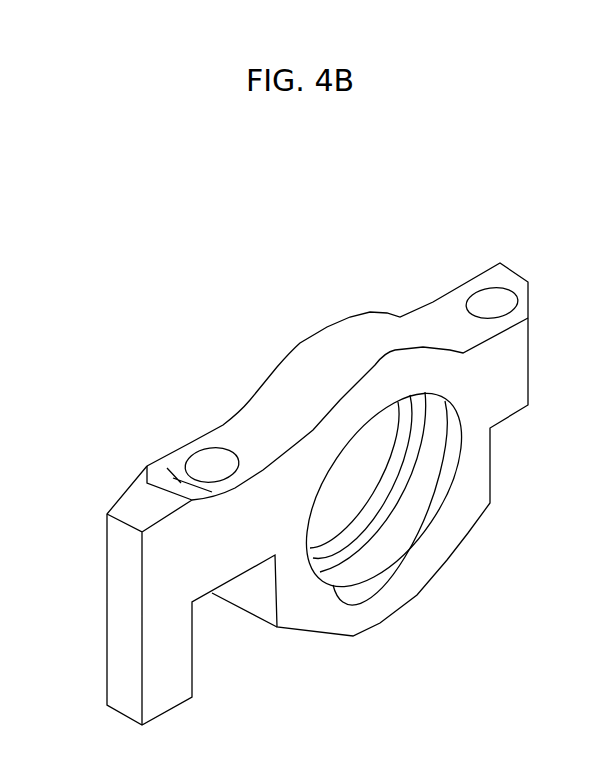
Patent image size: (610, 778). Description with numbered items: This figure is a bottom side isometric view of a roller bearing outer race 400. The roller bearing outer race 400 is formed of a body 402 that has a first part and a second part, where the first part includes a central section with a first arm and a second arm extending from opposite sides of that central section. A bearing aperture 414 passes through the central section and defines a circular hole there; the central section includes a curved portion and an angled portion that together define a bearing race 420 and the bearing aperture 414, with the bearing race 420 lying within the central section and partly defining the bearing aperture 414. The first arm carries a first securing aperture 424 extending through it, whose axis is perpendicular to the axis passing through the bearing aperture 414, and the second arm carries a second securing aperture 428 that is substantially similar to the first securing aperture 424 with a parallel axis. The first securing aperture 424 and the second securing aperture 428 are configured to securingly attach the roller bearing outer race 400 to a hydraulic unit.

The roller bearing outer race 400 is at (180, 239).
The body 402 is at (290, 614).
The bearing aperture 414 is at (374, 419).
The bearing race 420 is at (385, 548).
The first securing aperture 424 is at (490, 291).
The second securing aperture 428 is at (205, 451).